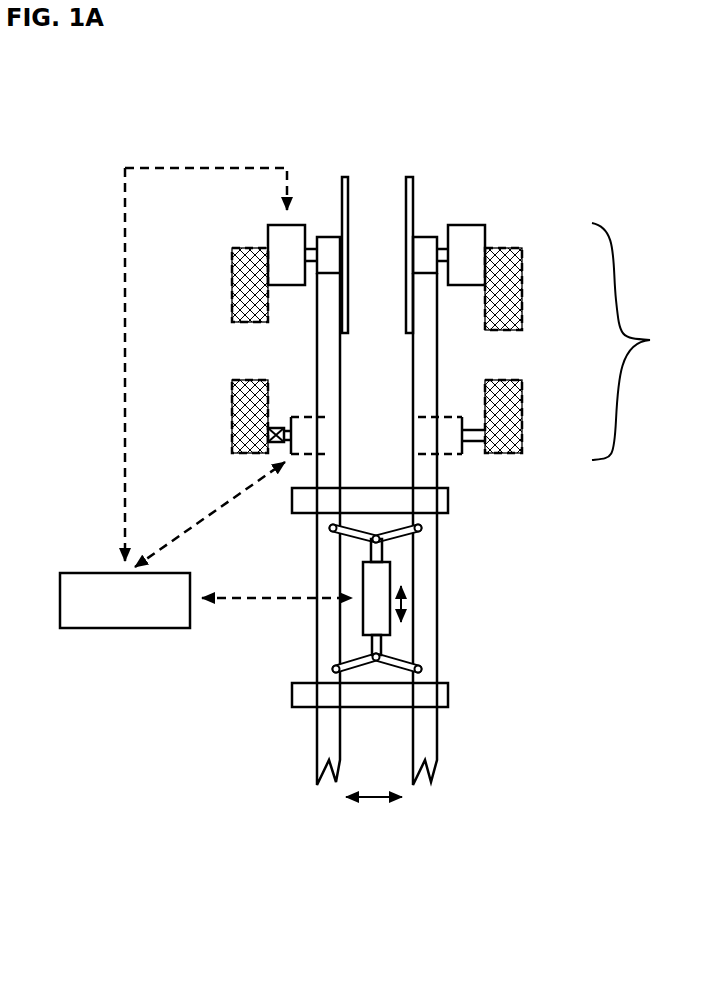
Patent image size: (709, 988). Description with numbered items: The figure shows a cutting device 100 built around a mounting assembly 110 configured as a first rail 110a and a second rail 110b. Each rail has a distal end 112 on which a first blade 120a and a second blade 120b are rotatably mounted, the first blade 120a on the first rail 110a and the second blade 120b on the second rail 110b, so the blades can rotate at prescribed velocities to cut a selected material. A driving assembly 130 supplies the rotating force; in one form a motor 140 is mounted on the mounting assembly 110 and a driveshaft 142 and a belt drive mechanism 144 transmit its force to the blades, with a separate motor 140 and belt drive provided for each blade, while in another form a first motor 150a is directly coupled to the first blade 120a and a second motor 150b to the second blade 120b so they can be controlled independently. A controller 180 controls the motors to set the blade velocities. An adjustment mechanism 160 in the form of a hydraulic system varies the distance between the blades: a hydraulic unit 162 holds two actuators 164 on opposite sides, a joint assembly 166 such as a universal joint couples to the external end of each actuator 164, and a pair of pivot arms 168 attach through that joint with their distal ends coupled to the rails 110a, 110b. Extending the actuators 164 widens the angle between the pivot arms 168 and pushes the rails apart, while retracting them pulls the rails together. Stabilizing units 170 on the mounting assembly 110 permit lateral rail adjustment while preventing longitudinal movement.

The cutting device 100 is at (550, 76).
The mounting assembly 110 is at (384, 550).
The first rail 110a is at (320, 737).
The second rail 110b is at (428, 738).
The distal end 112 is at (423, 232).
The first blade 120a is at (345, 177).
The second blade 120b is at (407, 177).
The driving assembly 130 is at (644, 341).
The motor 140 is at (420, 437).
The driveshaft 142 is at (276, 427).
The belt drive mechanism 144 is at (240, 290).
The first motor 150a is at (270, 232).
The second motor 150b is at (478, 234).
The adjustment mechanism 160 is at (385, 636).
The hydraulic unit 162 is at (365, 612).
The actuator 164 is at (383, 648).
The joint assembly 166 is at (376, 683).
The pivot arm 168 is at (358, 540).
The stabilizing unit 170 is at (300, 506).
The controller 180 is at (125, 628).